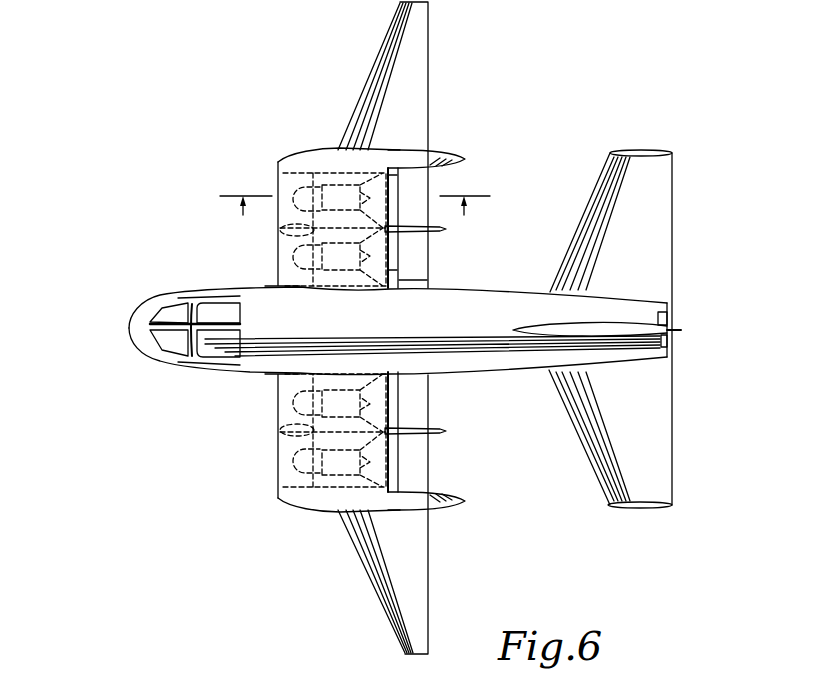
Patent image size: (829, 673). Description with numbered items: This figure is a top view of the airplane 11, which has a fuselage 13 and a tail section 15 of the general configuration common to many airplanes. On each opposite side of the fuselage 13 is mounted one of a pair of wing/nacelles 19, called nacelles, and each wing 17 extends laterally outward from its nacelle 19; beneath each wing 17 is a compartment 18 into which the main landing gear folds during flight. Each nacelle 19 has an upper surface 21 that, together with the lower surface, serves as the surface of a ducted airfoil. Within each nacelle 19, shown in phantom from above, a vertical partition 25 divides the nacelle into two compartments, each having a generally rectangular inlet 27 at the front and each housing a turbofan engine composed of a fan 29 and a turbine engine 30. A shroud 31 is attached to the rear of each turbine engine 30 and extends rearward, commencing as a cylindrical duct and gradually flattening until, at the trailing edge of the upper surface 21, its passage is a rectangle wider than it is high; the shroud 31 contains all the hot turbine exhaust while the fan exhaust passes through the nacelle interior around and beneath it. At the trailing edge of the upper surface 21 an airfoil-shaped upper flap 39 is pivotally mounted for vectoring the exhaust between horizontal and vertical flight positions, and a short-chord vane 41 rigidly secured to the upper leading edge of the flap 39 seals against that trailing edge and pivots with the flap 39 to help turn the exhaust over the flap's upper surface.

The airplane 11 is at (120, 301).
The fuselage 13 is at (508, 375).
The tail section 15 is at (642, 200).
The wing 17 is at (392, 40).
The compartment 18 is at (440, 150).
The wing/nacelle 19 is at (335, 165).
The upper surface 21 is at (398, 162).
The vertical partition 25 is at (290, 228).
The inlet 27 is at (276, 270).
The fan 29 is at (300, 207).
The turbine engine 30 is at (318, 182).
The shroud 31 is at (393, 150).
The upper flap 39 is at (416, 272).
The vane 41 is at (398, 196).